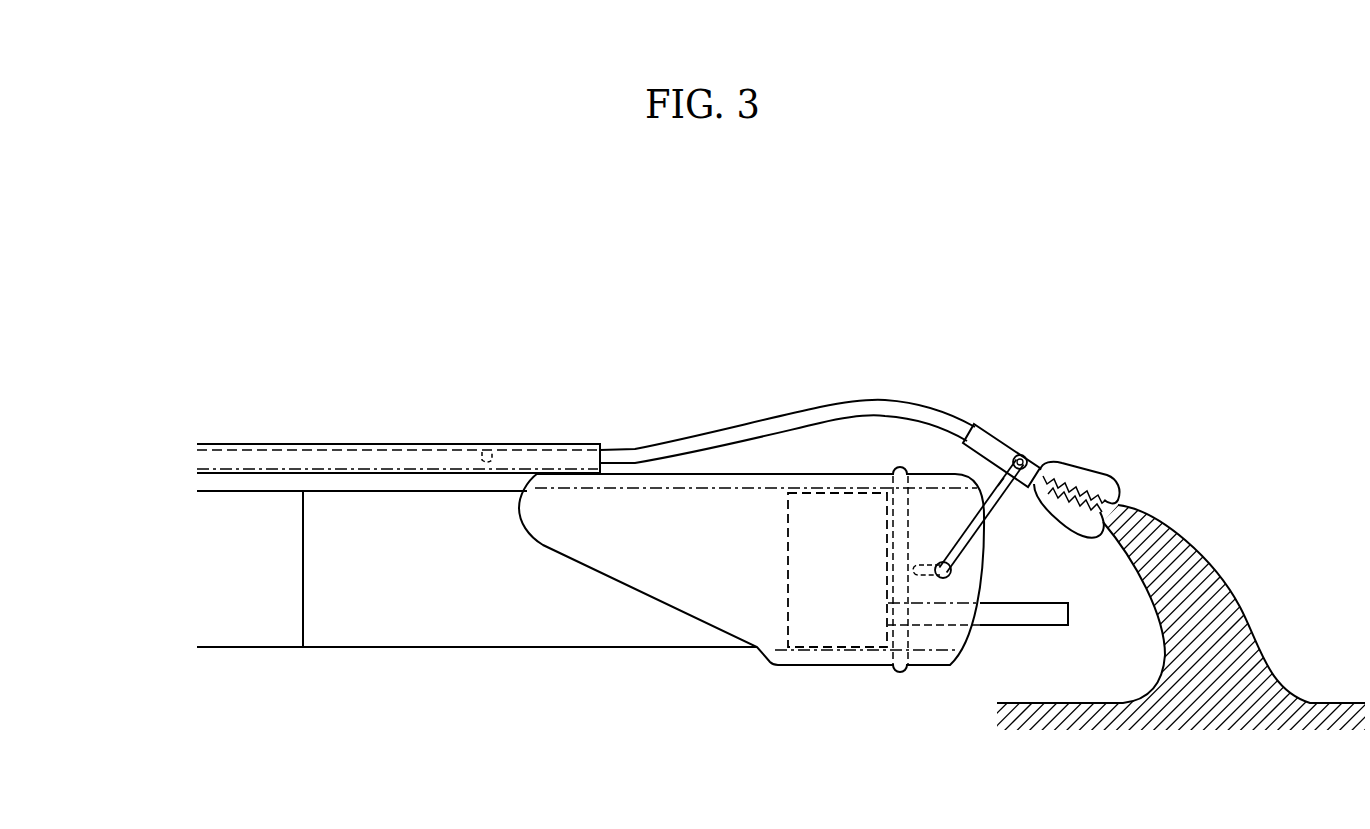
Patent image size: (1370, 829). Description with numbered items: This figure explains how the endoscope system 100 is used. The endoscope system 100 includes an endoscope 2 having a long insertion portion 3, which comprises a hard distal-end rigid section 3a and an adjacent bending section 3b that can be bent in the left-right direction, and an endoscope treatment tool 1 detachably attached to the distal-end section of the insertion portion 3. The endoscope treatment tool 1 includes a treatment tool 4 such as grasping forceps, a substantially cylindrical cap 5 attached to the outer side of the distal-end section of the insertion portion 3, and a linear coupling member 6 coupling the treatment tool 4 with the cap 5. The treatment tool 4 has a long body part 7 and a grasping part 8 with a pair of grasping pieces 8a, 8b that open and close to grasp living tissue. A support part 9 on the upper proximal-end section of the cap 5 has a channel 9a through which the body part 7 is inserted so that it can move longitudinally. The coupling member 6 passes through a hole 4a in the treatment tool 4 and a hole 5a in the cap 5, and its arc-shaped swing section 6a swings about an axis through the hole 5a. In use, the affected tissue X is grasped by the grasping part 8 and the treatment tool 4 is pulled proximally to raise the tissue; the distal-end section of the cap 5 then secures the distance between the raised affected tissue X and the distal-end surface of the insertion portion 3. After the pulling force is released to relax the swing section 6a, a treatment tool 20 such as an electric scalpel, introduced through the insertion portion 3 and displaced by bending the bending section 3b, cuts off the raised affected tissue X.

The endoscope system 100 is at (127, 261).
The endoscope treatment tool 1 is at (559, 364).
The endoscope 2 is at (651, 691).
The insertion portion 3 is at (240, 650).
The distal-end rigid section 3a is at (821, 650).
The bending section 3b is at (506, 650).
The treatment tool 4 is at (910, 340).
The hole 4a is at (1016, 455).
The cap 5 is at (800, 474).
The hole 5a is at (952, 571).
The coupling member 6 is at (1022, 521).
The swing section 6a is at (1000, 482).
The body part 7 is at (733, 432).
The grasping part 8 is at (1130, 401).
The grasping piece 8a is at (1105, 487).
The grasping piece 8b is at (1048, 477).
The support part 9 is at (372, 443).
The channel 9a is at (493, 445).
The treatment tool 20 is at (1017, 628).
The affected tissue X is at (1188, 538).